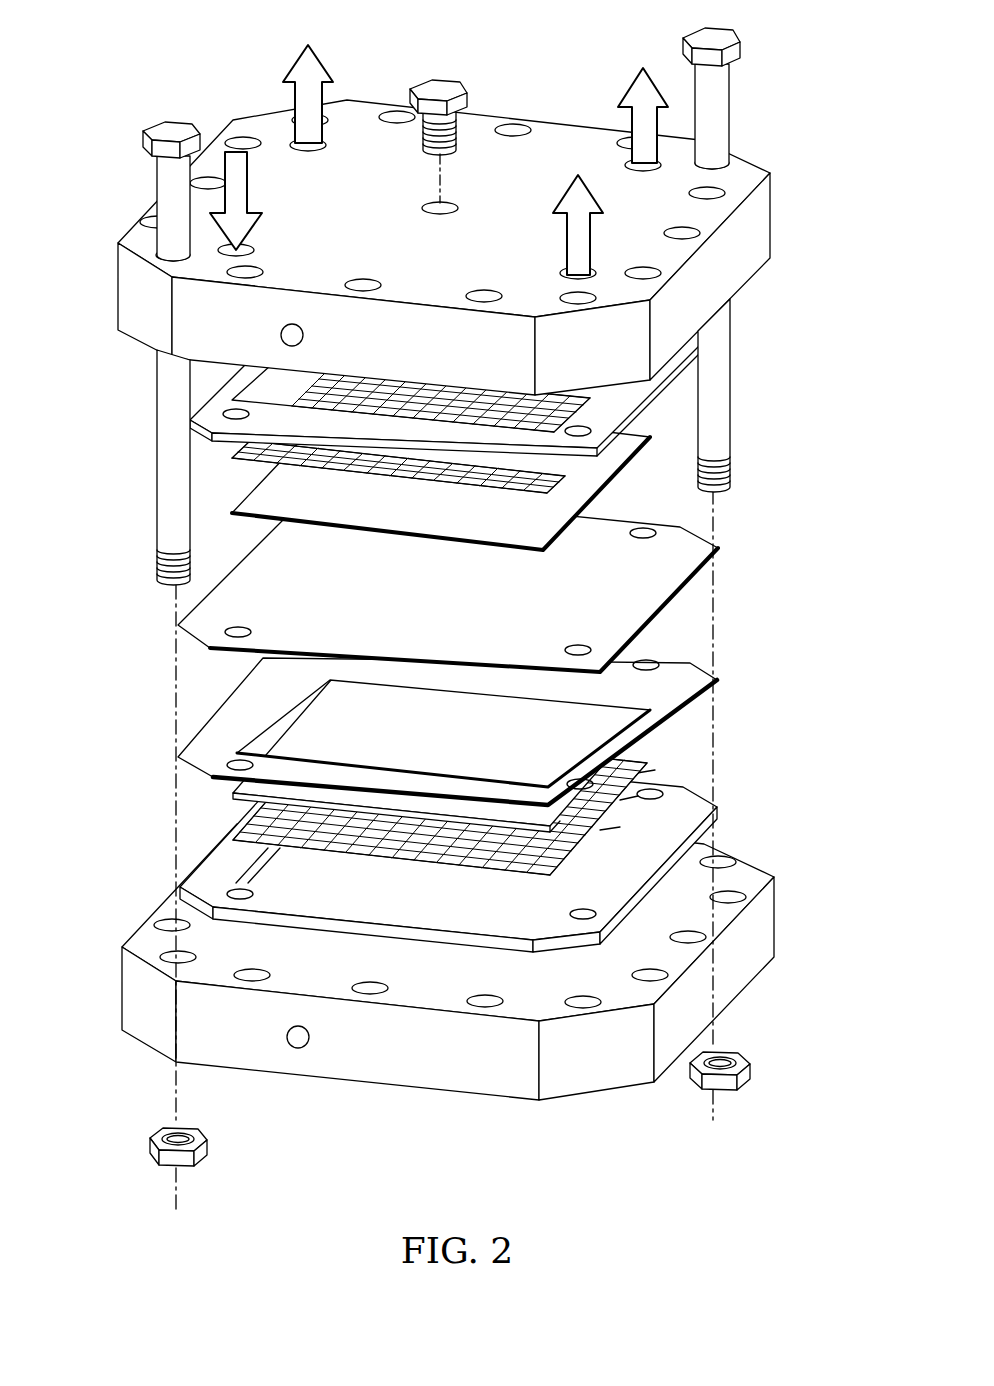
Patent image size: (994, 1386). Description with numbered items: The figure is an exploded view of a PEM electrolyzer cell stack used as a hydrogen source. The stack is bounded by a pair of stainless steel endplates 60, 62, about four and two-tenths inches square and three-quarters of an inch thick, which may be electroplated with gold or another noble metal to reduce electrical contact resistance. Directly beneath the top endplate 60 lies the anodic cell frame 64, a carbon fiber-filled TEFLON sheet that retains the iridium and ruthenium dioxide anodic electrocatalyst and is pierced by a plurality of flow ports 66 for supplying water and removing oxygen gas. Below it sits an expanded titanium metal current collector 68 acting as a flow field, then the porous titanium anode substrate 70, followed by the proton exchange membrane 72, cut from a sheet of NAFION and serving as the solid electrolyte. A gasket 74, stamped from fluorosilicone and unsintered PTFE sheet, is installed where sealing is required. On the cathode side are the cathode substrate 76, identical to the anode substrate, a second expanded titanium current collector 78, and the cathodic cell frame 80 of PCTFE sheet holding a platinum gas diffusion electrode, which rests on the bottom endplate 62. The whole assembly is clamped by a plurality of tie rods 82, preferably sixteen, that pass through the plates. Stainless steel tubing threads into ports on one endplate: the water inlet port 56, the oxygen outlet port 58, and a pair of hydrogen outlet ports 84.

The water inlet port 56 is at (248, 175).
The oxygen outlet port 58 is at (634, 72).
The top endplate 60 is at (117, 276).
The bottom endplate 62 is at (121, 988).
The anodic cell frame 64 is at (225, 440).
The flow ports 66 is at (242, 628).
The expanded titanium metal current collector 68 is at (248, 462).
The anode substrate 70 is at (610, 478).
The proton exchange membrane 72 is at (720, 548).
The gasket 74 is at (190, 745).
The cathode substrate 76 is at (236, 796).
The expanded titanium metal current collector 78 is at (238, 843).
The cathodic cell frame 80 is at (720, 812).
The tie rods 82 is at (147, 126).
The hydrogen outlet ports 84 is at (318, 62).